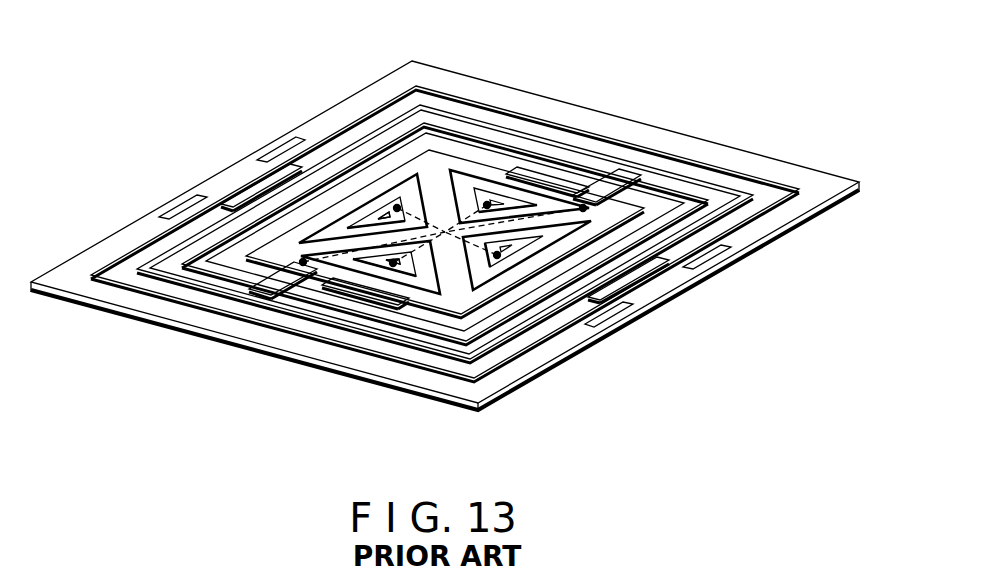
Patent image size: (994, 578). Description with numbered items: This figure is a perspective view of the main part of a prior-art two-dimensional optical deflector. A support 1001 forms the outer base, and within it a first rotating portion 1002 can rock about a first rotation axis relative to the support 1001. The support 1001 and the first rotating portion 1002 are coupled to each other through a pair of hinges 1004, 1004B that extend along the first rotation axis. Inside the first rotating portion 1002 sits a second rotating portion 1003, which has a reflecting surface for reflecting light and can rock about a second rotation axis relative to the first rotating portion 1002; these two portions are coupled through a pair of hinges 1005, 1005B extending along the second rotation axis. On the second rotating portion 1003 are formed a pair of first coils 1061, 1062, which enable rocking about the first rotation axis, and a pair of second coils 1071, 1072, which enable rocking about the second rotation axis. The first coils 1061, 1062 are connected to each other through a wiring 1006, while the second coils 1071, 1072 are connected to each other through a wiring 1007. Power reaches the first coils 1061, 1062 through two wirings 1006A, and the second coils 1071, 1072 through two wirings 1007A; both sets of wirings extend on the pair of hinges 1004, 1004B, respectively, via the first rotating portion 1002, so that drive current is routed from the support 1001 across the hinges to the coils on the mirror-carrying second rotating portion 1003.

The support 1001 is at (840, 198).
The first rotating portion 1002 is at (766, 234).
The second rotating portion 1003 is at (733, 180).
The hinge 1004 is at (650, 268).
The hinge 1004B is at (263, 182).
The hinge 1005 is at (363, 307).
The hinge 1005B is at (548, 168).
The wiring 1006 is at (445, 222).
The wiring 1006A is at (500, 322).
The wiring 1007 is at (480, 312).
The wiring 1007A is at (685, 183).
The first coil 1061 is at (413, 290).
The first coil 1062 is at (483, 180).
The second coil 1071 is at (645, 306).
The second coil 1072 is at (250, 296).